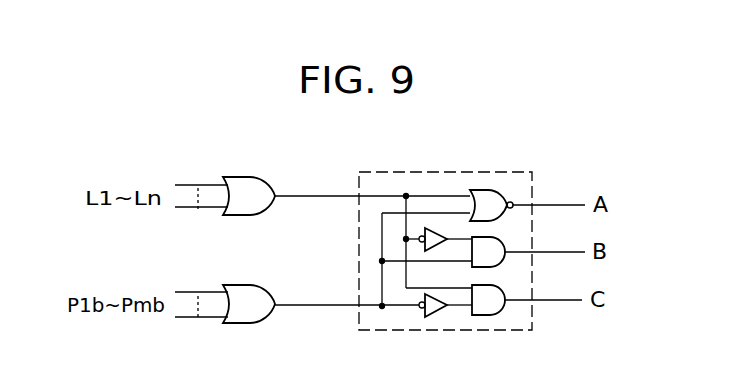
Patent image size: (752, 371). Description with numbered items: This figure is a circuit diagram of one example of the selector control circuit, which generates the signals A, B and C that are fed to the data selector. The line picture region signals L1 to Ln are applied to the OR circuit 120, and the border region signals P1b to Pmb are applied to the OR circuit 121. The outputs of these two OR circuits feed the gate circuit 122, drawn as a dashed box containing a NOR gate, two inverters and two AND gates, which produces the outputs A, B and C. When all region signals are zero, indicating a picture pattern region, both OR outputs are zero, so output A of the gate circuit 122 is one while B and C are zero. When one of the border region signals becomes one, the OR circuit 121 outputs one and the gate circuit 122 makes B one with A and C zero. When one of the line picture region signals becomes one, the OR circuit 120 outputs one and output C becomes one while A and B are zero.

The OR circuit 120 is at (263, 177).
The OR circuit 121 is at (262, 285).
The gate circuit 122 is at (472, 171).